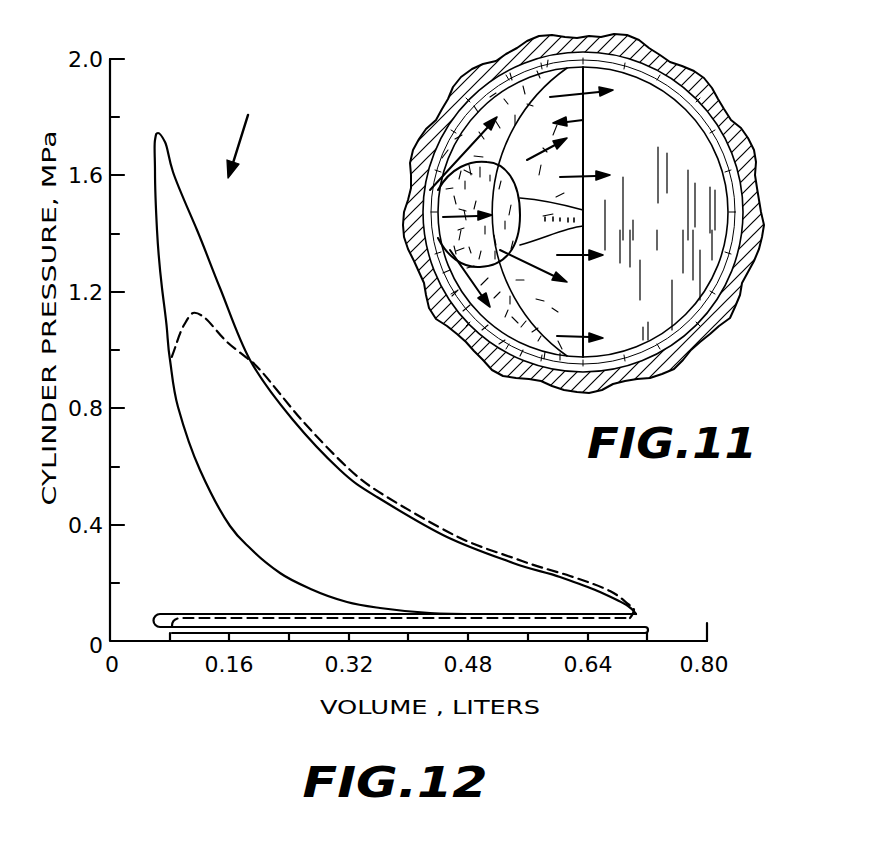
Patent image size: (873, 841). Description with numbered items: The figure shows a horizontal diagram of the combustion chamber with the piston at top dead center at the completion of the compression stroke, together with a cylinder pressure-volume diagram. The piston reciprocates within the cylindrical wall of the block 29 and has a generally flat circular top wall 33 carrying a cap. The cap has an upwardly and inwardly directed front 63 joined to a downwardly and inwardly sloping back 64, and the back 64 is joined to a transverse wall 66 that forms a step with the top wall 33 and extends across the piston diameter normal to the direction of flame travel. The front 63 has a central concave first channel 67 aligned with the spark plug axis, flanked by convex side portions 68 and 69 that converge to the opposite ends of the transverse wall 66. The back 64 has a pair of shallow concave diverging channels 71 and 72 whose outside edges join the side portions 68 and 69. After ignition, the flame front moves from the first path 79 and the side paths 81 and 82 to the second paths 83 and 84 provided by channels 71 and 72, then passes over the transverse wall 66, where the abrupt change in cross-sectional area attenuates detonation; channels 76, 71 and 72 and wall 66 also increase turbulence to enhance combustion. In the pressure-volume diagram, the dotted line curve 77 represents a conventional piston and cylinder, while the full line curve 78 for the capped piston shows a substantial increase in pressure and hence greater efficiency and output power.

In FIG. 11, the block 29 is at (732, 120).
In FIG. 11, the top wall of piston 33 is at (675, 130).
In FIG. 11, the front of cap 63 is at (439, 196).
In FIG. 11, the back of cap 64 is at (585, 117).
In FIG. 11, the transverse wall 66 is at (585, 303).
In FIG. 11, the first channel or pocket 67 is at (440, 238).
In FIG. 11, the convex side portion 68 is at (483, 110).
In FIG. 11, the convex side portion 69 is at (463, 357).
In FIG. 11, the second channel or pocket 71 is at (537, 110).
In FIG. 11, the second channel or pocket 72 is at (497, 377).
In FIG. 12, the channel 76 is at (247, 132).
In FIG. 12, the dotted line curve 77 is at (377, 497).
In FIG. 12, the full line curve 78 is at (208, 266).
In FIG. 11, the first path 79 is at (427, 228).
In FIG. 11, the side path 81 is at (463, 157).
In FIG. 11, the side path 82 is at (428, 305).
In FIG. 11, the second path 83 is at (527, 162).
In FIG. 11, the second path 84 is at (512, 280).